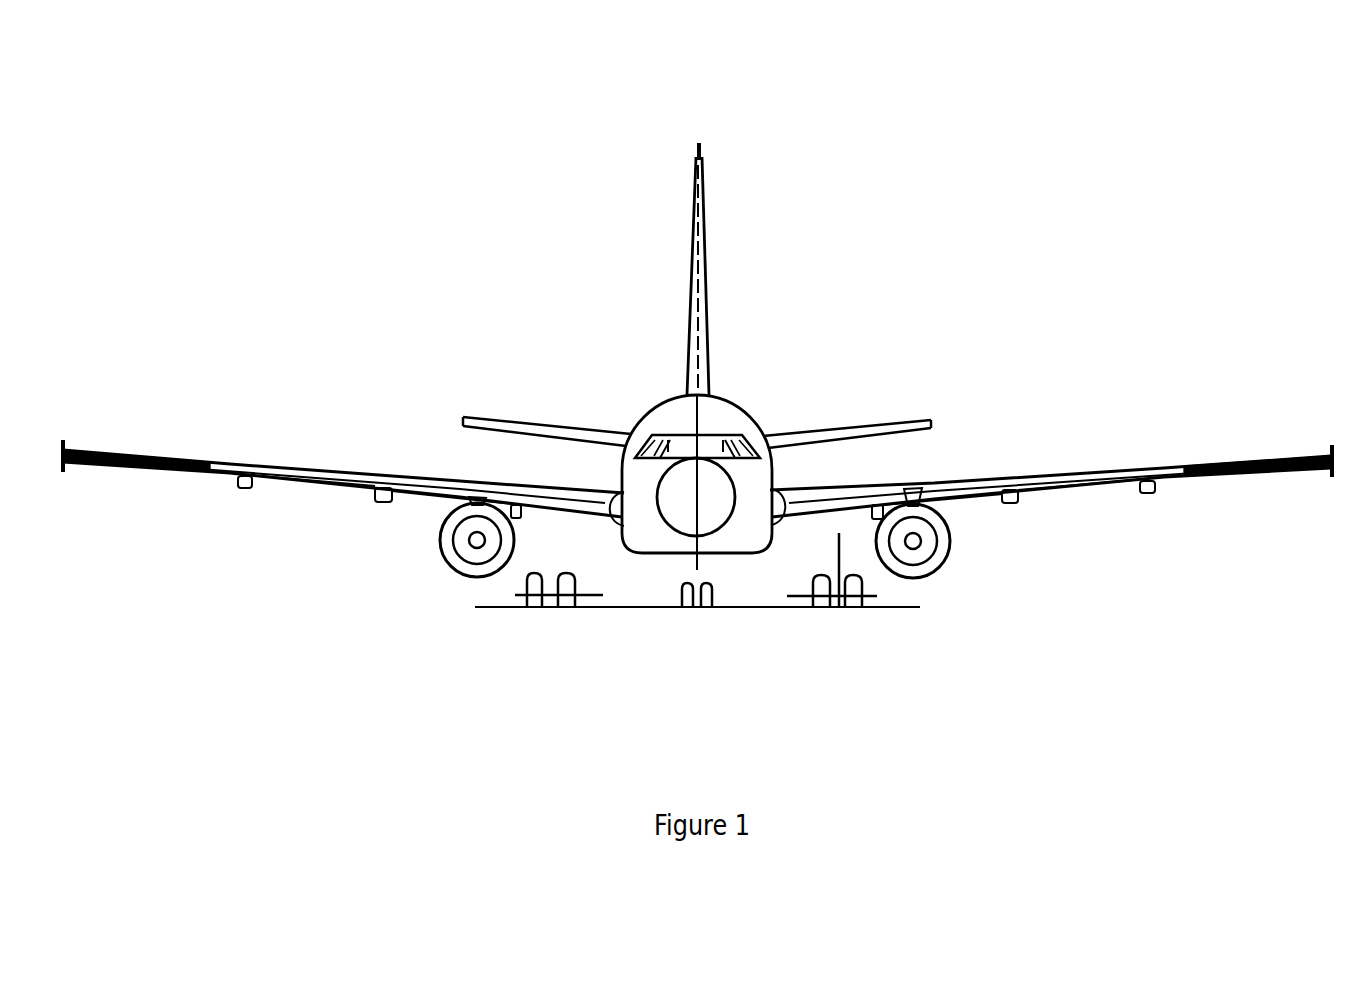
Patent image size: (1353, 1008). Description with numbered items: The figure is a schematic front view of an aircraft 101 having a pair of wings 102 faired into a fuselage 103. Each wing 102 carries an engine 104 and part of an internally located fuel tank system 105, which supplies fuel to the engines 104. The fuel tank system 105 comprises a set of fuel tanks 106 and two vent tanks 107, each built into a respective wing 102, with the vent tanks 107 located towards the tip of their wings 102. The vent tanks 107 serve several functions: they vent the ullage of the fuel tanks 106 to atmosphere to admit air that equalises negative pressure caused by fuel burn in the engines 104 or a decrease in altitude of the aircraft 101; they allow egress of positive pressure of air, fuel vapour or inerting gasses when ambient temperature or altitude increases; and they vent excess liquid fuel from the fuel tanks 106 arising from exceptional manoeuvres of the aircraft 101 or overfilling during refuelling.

The aircraft 101 is at (517, 290).
The wing 102 is at (240, 490).
The fuselage 103 is at (741, 408).
The engine 104 is at (477, 560).
The fuel tank system 105 is at (270, 466).
The fuel tank 106 is at (325, 466).
The vent tank 107 is at (97, 452).